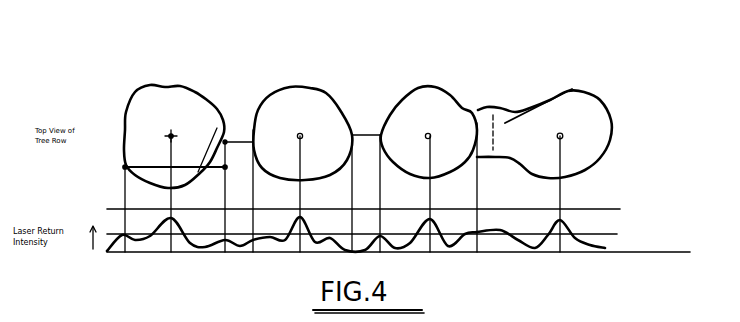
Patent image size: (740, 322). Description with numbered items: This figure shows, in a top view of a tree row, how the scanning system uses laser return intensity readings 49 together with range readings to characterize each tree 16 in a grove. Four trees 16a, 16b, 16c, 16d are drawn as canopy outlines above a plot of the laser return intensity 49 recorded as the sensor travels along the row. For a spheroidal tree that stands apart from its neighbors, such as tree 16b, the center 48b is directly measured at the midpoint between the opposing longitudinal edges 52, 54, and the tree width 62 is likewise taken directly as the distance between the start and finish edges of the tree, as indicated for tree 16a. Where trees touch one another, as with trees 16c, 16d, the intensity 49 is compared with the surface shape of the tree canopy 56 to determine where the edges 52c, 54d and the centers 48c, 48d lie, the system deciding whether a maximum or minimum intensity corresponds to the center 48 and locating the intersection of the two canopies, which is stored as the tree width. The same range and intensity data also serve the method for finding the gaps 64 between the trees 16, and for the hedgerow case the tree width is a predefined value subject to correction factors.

The tree 16 is at (346, 77).
The first tree 16a is at (174, 168).
The second tree 16b is at (302, 169).
The third tree 16c is at (429, 169).
The fourth tree 16d is at (544, 171).
The center of a tree 48 is at (157, 133).
The center of tree 16b 48b is at (298, 138).
The center of tree 16c 48c is at (432, 139).
The center of tree 16d 48d is at (563, 138).
The laser return intensity readings 49 is at (200, 252).
The longitudinal edge 52 is at (346, 149).
The edge of tree 16c 52c is at (479, 108).
The longitudinal edge 54 is at (380, 151).
The edge of tree 16d 54d is at (572, 89).
The tree canopy 56 is at (176, 84).
The tree width 62 is at (156, 166).
The gap between trees 64 is at (243, 112).